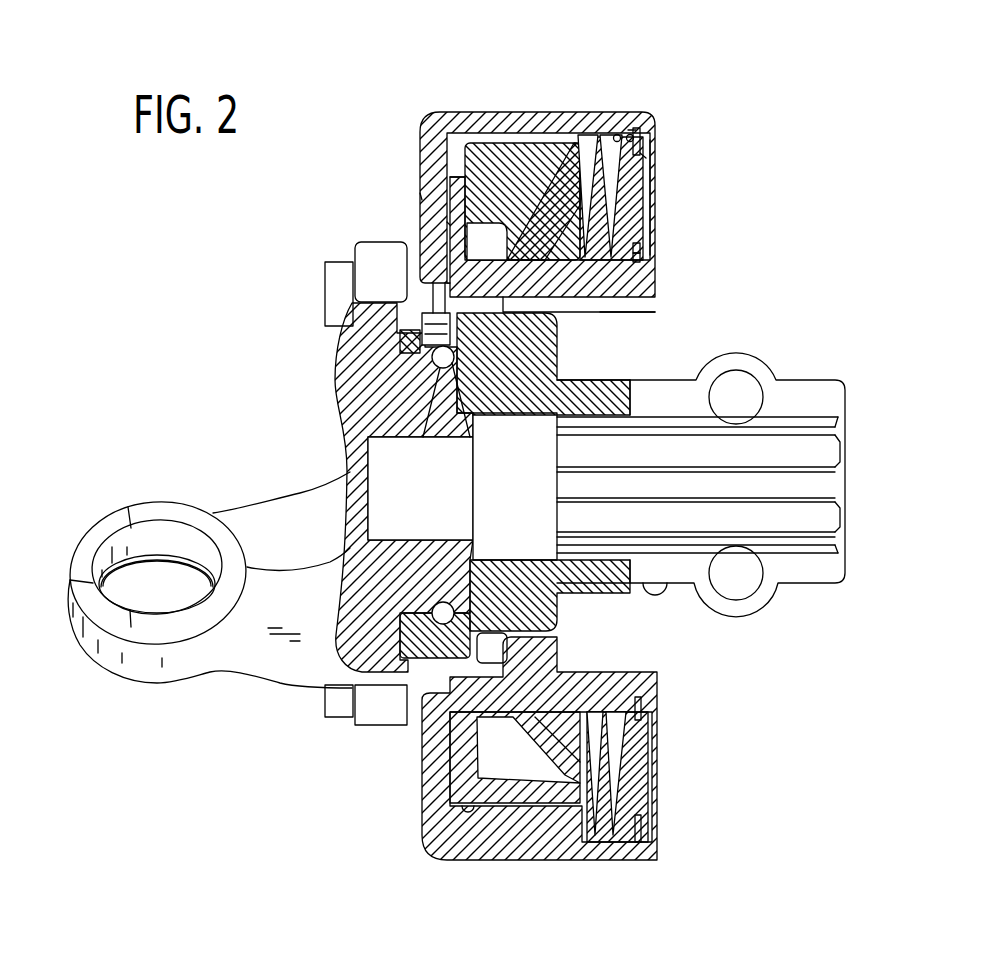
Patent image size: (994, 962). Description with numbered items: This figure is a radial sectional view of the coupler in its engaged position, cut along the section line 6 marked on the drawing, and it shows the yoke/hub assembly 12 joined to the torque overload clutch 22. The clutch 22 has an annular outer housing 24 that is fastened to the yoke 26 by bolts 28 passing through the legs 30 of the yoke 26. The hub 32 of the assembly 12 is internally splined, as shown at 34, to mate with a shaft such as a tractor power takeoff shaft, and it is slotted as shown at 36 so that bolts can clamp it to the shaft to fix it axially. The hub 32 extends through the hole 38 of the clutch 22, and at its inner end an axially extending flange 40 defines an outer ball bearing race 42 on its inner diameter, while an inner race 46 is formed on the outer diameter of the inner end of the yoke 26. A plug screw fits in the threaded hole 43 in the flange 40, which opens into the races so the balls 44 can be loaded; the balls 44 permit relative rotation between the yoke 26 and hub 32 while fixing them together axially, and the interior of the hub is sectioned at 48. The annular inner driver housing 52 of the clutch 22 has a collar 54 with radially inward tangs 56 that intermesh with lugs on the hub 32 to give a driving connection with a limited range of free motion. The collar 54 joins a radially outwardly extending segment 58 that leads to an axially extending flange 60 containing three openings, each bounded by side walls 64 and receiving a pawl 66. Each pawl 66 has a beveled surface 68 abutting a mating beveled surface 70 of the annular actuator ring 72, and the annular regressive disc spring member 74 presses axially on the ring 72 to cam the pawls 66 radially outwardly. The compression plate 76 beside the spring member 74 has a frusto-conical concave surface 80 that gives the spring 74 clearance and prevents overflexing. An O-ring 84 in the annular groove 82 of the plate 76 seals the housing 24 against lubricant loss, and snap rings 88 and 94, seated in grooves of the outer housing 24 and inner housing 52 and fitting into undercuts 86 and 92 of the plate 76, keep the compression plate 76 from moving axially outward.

The section line 6- 6 is at (547, 85).
The yoke/hub assembly 12 is at (860, 521).
The torque overload clutch 22 is at (416, 121).
The annular outer housing 24 is at (420, 195).
The yoke 26 is at (86, 697).
The bolts 28 is at (323, 300).
The legs 30 is at (360, 242).
The hub 32 is at (806, 380).
The splines 34 is at (822, 440).
The slot 36 is at (698, 378).
The hole 38 is at (658, 596).
The axially extending flange 40 is at (557, 340).
The outer ball bearing race 42 is at (352, 384).
The threaded hole 43 is at (420, 326).
The balls 44 is at (472, 425).
The inner race 46 is at (460, 420).
The window 48 is at (420, 488).
The annular inner driver housing 52 is at (561, 310).
The collar 54 is at (608, 305).
The tangs 56 is at (560, 658).
The radially outwardly extending segment 58 is at (443, 222).
The axially extending flange 60 is at (517, 805).
The side walls 64 is at (477, 120).
The pawl 66 is at (528, 125).
The beveled surface 68 is at (503, 251).
The mating beveled surface 70 is at (550, 227).
The annular actuator ring 72 is at (548, 155).
The annular regressive disc spring member 74 is at (601, 155).
The compression plate 76 is at (652, 188).
The frusto-conical concave surface 80 is at (615, 215).
The annular groove 82 is at (621, 130).
The O-ring 84 is at (634, 134).
The undercut 86 is at (647, 162).
The snap ring 88 is at (645, 130).
The undercut 92 is at (641, 250).
The snap ring 94 is at (642, 262).